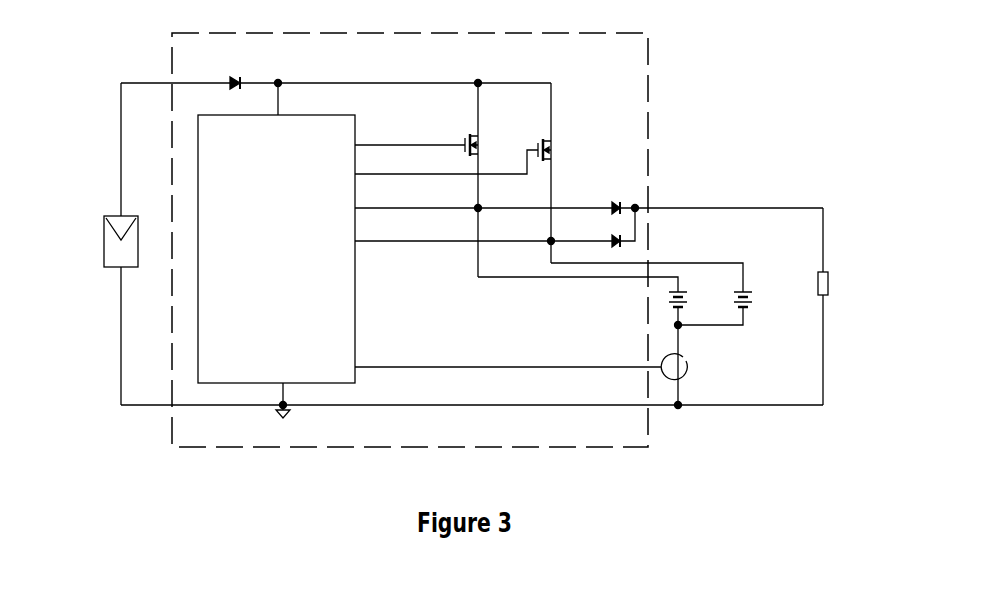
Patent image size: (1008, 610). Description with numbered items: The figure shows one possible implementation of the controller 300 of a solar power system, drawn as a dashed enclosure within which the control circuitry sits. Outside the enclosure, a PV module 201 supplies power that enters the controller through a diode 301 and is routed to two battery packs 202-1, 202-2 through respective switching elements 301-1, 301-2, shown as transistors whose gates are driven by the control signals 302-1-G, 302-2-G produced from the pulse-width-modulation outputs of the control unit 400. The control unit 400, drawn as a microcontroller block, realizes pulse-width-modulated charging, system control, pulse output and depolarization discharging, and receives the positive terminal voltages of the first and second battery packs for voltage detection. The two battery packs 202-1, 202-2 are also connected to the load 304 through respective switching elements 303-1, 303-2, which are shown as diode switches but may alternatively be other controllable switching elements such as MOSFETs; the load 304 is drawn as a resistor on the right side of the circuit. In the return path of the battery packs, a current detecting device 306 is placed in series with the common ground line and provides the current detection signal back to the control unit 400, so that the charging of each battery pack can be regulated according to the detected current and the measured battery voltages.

The PV module 201 is at (93, 244).
The first battery pack 202-1 is at (701, 291).
The second battery pack 202-2 is at (766, 291).
The controller 300 is at (410, 228).
The input diode 301 is at (256, 86).
The first switch transistor 301-1 is at (499, 179).
The second switch transistor 301-2 is at (572, 173).
The first control signal 302-1-G is at (410, 136).
The second control signal 302-2-G is at (446, 162).
The first load switching element 303-1 is at (601, 199).
The second load switching element 303-2 is at (601, 232).
The load 304 is at (845, 306).
The current detecting device 306 is at (539, 367).
The control unit 400 is at (294, 269).